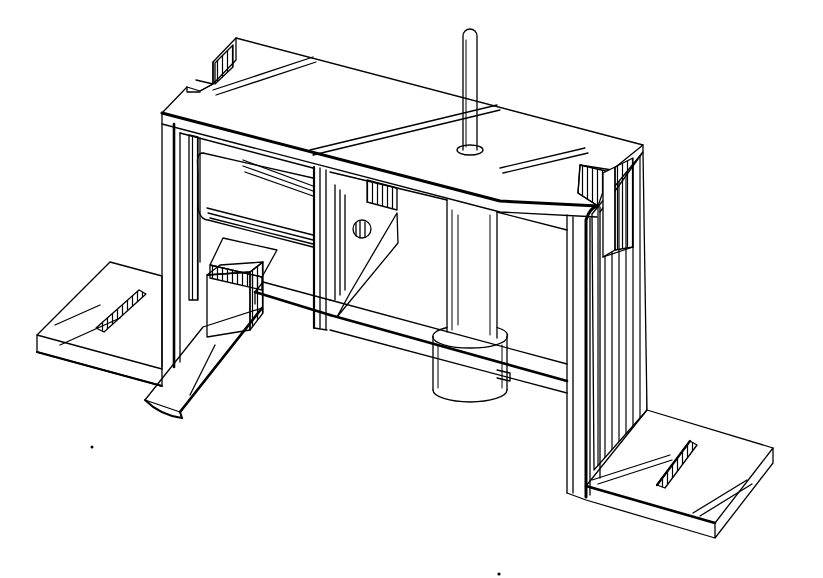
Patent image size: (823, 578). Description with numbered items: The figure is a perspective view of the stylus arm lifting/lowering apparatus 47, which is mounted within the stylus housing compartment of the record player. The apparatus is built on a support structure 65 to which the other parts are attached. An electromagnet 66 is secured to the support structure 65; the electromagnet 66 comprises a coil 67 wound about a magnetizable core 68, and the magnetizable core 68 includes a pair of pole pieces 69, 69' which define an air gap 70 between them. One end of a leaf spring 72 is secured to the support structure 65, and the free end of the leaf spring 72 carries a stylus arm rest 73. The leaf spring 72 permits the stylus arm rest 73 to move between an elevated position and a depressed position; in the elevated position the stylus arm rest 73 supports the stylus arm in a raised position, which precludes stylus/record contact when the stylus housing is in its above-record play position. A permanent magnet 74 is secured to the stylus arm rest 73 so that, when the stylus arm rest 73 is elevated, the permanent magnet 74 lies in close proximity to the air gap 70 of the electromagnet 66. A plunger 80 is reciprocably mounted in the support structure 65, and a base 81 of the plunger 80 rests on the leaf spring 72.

The stylus arm lifting/lowering apparatus 47 is at (564, 91).
The support structure 65 is at (387, 84).
The electromagnet 66 is at (297, 331).
The coil 67 is at (229, 166).
The magnetizable core 68 is at (367, 234).
The pole piece 69 is at (250, 312).
The pole piece 69' is at (177, 99).
The air gap 70 is at (200, 270).
The leaf spring 72 is at (366, 322).
The stylus arm rest 73 is at (167, 387).
The permanent magnet 74 is at (240, 246).
The plunger 80 is at (479, 54).
The base 81 is at (472, 396).